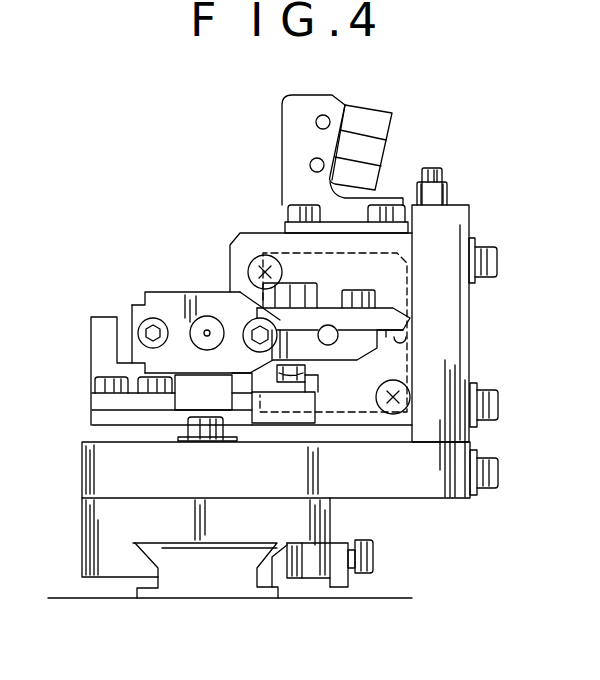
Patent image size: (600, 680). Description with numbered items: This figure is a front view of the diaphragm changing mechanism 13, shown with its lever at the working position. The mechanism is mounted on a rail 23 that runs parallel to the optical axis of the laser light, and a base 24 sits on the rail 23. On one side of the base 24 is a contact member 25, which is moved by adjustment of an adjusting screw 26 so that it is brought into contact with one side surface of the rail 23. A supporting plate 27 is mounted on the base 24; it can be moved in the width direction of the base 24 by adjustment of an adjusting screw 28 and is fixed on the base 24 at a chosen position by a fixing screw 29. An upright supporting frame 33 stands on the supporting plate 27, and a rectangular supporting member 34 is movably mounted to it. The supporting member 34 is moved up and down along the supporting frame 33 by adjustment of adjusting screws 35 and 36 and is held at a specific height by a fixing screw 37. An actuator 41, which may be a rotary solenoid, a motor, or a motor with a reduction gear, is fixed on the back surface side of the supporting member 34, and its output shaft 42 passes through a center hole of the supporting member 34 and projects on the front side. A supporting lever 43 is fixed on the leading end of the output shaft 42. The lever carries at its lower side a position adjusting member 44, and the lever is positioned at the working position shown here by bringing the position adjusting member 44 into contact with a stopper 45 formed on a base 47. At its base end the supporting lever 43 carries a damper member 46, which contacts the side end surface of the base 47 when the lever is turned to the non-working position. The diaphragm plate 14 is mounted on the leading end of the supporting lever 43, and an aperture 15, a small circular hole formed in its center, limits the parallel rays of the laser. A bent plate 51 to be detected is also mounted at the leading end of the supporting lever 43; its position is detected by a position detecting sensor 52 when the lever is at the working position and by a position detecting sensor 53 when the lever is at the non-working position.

The diaphragm changing mechanism 13 is at (153, 250).
The diaphragm plate 14 is at (205, 330).
The aperture 15 is at (145, 292).
The rail 23 is at (192, 587).
The base 24 is at (100, 530).
The contact member 25 is at (287, 590).
The adjusting screw 26 is at (373, 555).
The supporting plate 27 is at (97, 463).
The adjusting screw 28 is at (498, 473).
The fixing screw 29 is at (208, 428).
The supporting frame 33 is at (460, 318).
The supporting member 34 is at (252, 240).
The adjusting screw 35 is at (448, 190).
The adjusting screw 36 is at (428, 168).
The fixing screw 37 is at (497, 247).
The actuator 41 is at (415, 250).
The output shaft 42 is at (328, 325).
The supporting lever 43 is at (277, 323).
The position adjusting member 44 is at (292, 370).
The stopper 45 is at (303, 380).
The damper member 46 is at (404, 344).
The base 47 is at (282, 402).
The plate to be detected 51 is at (138, 313).
The position detecting sensor 52 is at (105, 342).
The position detecting sensor 53 is at (375, 115).